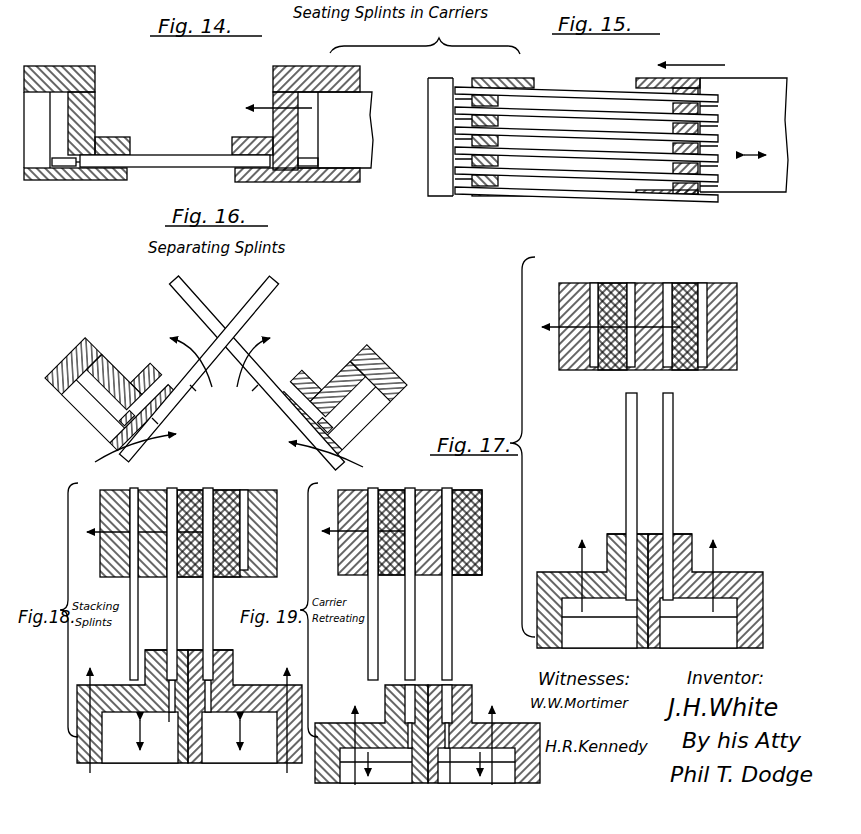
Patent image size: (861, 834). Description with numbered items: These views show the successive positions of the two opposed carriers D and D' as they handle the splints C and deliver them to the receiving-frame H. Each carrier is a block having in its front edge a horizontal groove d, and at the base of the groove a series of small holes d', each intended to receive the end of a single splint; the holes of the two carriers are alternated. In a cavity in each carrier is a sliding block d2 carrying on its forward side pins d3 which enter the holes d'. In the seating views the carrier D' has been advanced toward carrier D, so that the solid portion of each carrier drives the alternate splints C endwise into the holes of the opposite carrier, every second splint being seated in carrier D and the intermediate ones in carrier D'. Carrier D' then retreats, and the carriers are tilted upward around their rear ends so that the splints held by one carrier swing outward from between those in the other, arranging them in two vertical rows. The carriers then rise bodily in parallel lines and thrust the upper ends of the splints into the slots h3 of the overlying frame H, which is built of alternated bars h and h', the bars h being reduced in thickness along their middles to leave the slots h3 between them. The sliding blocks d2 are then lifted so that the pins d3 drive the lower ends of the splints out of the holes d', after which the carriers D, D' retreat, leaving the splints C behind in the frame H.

In FIG. 14, the carrier D is at (75, 113).
In FIG. 15, the carrier D is at (492, 124).
In FIG. 16, the carrier D is at (111, 384).
In FIG. 17, the carrier D is at (592, 591).
In FIG. 18, the carrier D is at (132, 706).
In FIG. 19, the carrier D is at (371, 734).
In FIG. 14, the carrier D' is at (304, 114).
In FIG. 15, the carrier D' is at (705, 124).
In FIG. 16, the carrier D' is at (341, 391).
In FIG. 17, the carrier D' is at (707, 591).
In FIG. 18, the carrier D' is at (245, 706).
In FIG. 19, the carrier D' is at (484, 734).
In FIG. 14, the horizontal groove d is at (184, 145).
In FIG. 16, the horizontal groove d is at (225, 396).
In FIG. 17, the horizontal groove d is at (648, 521).
In FIG. 18, the horizontal groove d is at (191, 639).
In FIG. 19, the horizontal groove d is at (437, 689).
In FIG. 14, the small holes d' is at (98, 138).
In FIG. 16, the small holes d' is at (172, 436).
In FIG. 17, the small holes d' is at (612, 573).
In FIG. 18, the small holes d' is at (190, 696).
In FIG. 19, the small holes d' is at (402, 716).
In FIG. 14, the sliding block d2 is at (192, 130).
In FIG. 15, the sliding block d2 is at (608, 137).
In FIG. 16, the sliding block d2 is at (219, 420).
In FIG. 17, the sliding block d2 is at (649, 623).
In FIG. 18, the sliding block d2 is at (189, 737).
In FIG. 19, the sliding block d2 is at (427, 765).
In FIG. 14, the pins d3 is at (62, 158).
In FIG. 15, the pins d3 is at (712, 100).
In FIG. 16, the pins d3 is at (225, 409).
In FIG. 17, the pins d3 is at (627, 610).
In FIG. 18, the pins d3 is at (160, 732).
In FIG. 19, the pins d3 is at (427, 768).
In FIG. 14, the splints C is at (178, 161).
In FIG. 15, the splints C is at (586, 144).
In FIG. 16, the splints C is at (231, 373).
In FIG. 17, the splints C is at (649, 496).
In FIG. 18, the splints C is at (171, 584).
In FIG. 19, the splints C is at (410, 584).
In FIG. 17, the receiving-frame H is at (660, 278).
In FIG. 18, the receiving-frame H is at (188, 524).
In FIG. 19, the receiving-frame H is at (418, 484).
In FIG. 17, the bars h is at (647, 325).
In FIG. 18, the bars h is at (165, 525).
In FIG. 19, the bars h is at (409, 532).
In FIG. 17, the bars h' is at (620, 325).
In FIG. 18, the bars h' is at (167, 525).
In FIG. 19, the bars h' is at (401, 532).
In FIG. 17, the splint-receiving slots h3 is at (590, 382).
In FIG. 18, the splint-receiving slots h3 is at (244, 500).
In FIG. 19, the splint-receiving slots h3 is at (456, 574).